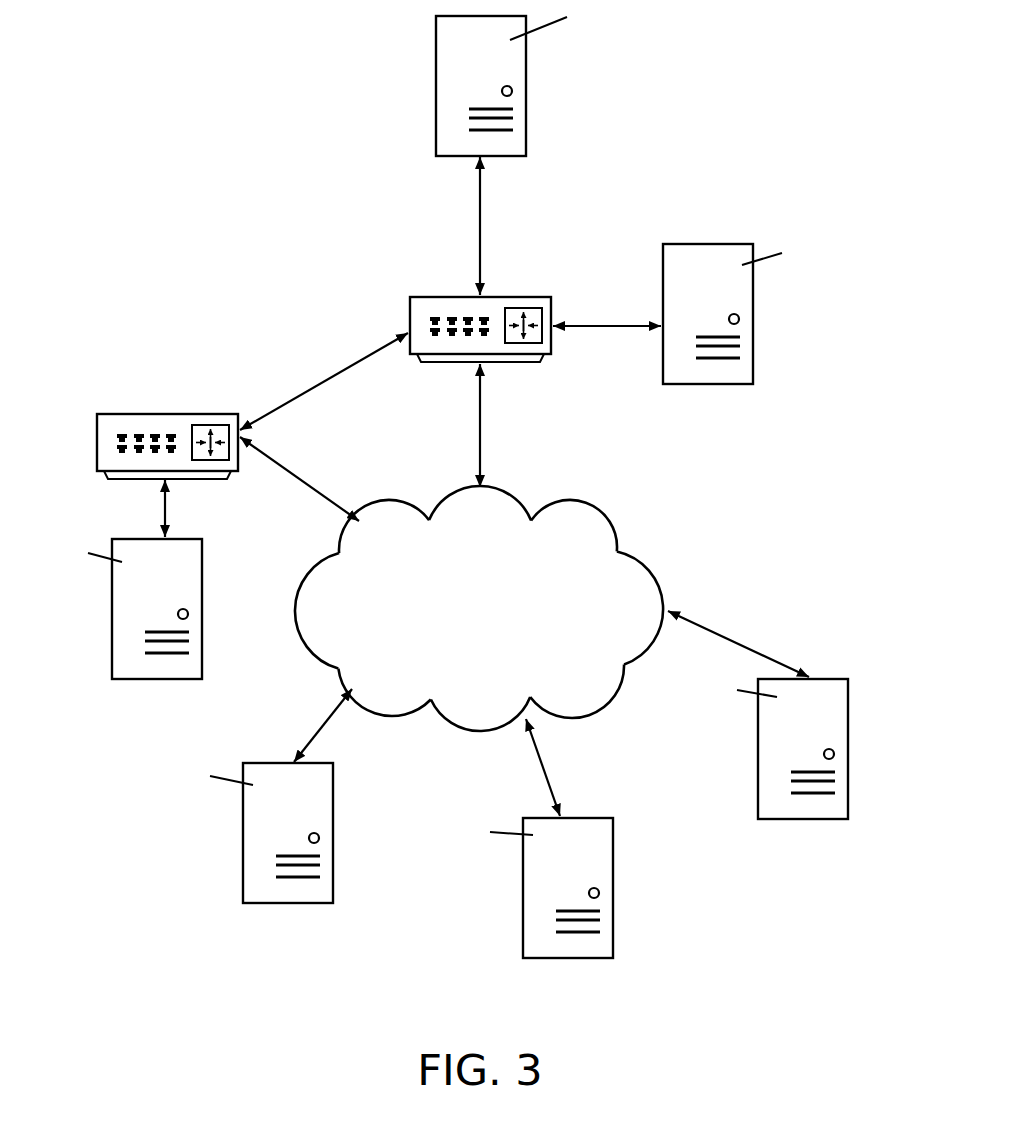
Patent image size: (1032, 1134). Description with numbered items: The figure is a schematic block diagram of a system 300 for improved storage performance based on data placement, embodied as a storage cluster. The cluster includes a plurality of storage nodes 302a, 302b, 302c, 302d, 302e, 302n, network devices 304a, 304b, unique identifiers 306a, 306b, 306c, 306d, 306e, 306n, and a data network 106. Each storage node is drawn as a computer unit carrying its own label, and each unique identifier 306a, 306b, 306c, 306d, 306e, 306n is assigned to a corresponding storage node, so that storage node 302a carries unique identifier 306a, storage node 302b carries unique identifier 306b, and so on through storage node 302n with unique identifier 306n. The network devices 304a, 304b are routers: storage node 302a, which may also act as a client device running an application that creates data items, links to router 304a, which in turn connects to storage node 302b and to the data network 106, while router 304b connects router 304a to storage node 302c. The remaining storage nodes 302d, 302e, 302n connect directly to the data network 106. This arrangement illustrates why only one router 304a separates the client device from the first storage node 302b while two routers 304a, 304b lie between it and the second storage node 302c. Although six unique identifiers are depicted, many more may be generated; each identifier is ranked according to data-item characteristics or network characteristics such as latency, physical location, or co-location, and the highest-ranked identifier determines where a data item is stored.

The system 300 is at (132, 67).
The data network 106 is at (461, 634).
The storage node 302a is at (436, 46).
The storage node 302b is at (663, 265).
The storage node 302c is at (112, 660).
The storage node 302d is at (243, 880).
The storage node 302e is at (523, 940).
The storage node 302n is at (758, 790).
The network device 304a is at (410, 306).
The network device 304b is at (97, 430).
The unique identifier 306a is at (653, 17).
The unique identifier 306b is at (858, 253).
The unique identifier 306c is at (43, 560).
The unique identifier 306d is at (140, 775).
The unique identifier 306e is at (420, 828).
The unique identifier 306n is at (668, 687).